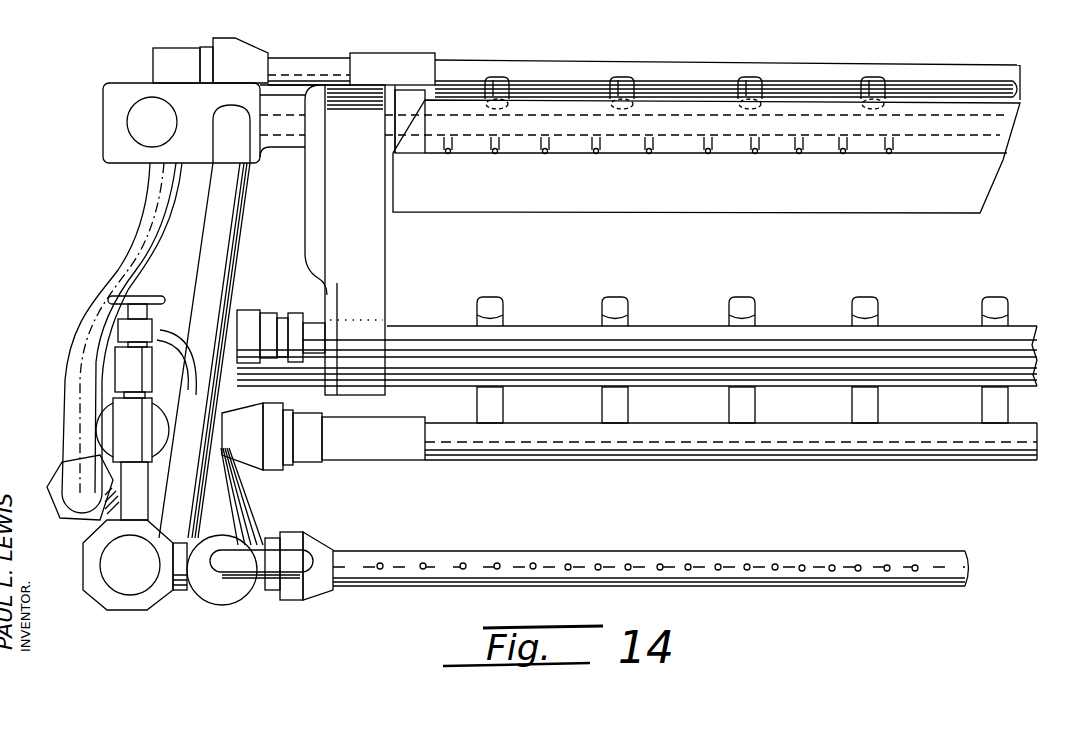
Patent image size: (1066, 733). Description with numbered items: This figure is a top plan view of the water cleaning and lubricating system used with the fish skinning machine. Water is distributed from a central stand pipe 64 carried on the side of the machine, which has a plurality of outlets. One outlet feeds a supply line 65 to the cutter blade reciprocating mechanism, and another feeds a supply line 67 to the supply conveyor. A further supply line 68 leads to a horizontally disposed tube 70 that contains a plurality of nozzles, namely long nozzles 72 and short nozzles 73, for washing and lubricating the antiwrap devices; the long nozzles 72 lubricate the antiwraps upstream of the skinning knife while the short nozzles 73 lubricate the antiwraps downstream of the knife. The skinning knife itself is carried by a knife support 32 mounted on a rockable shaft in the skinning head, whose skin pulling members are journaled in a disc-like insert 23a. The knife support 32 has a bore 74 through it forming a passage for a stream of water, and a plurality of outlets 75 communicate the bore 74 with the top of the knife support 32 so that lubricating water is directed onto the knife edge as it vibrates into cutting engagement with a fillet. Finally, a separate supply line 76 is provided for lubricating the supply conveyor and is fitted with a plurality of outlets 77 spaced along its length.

The disc like insert 23a is at (368, 280).
The knife support 32 is at (478, 203).
The central stand pipe 64 is at (137, 605).
The supply line 65 is at (220, 290).
The supply line 67 is at (546, 565).
The supply line 68 is at (165, 222).
The horizontally disposed tube 70 is at (575, 68).
The long nozzle 72 is at (500, 300).
The short nozzle 73 is at (500, 78).
The bore 74 is at (665, 128).
The outlet 75 is at (705, 143).
The supply line 76 is at (747, 542).
The outlet 77 is at (426, 564).